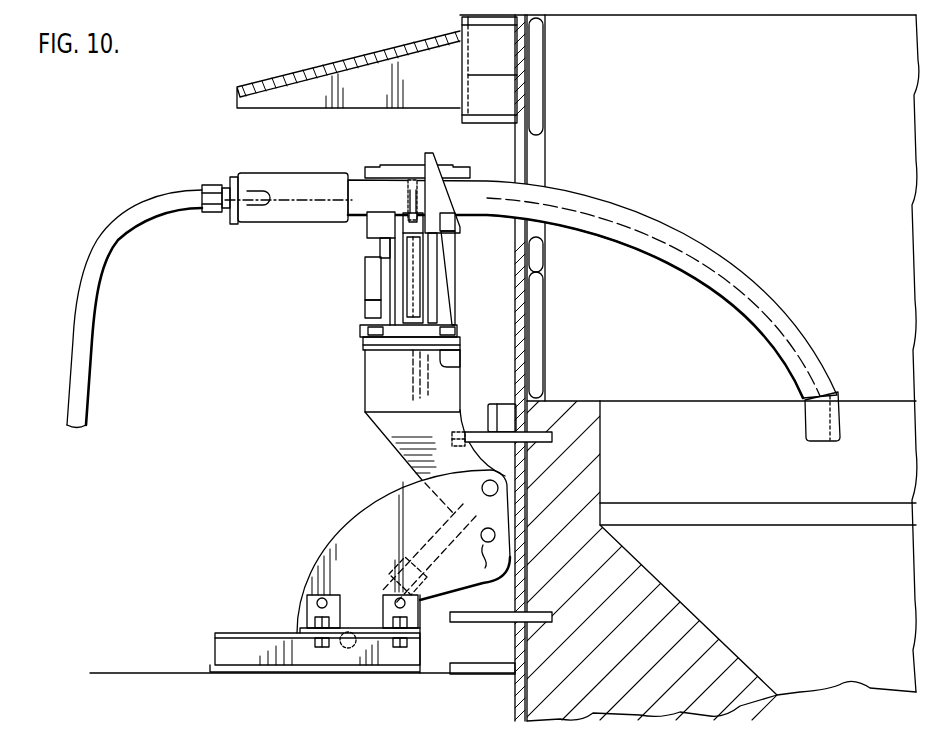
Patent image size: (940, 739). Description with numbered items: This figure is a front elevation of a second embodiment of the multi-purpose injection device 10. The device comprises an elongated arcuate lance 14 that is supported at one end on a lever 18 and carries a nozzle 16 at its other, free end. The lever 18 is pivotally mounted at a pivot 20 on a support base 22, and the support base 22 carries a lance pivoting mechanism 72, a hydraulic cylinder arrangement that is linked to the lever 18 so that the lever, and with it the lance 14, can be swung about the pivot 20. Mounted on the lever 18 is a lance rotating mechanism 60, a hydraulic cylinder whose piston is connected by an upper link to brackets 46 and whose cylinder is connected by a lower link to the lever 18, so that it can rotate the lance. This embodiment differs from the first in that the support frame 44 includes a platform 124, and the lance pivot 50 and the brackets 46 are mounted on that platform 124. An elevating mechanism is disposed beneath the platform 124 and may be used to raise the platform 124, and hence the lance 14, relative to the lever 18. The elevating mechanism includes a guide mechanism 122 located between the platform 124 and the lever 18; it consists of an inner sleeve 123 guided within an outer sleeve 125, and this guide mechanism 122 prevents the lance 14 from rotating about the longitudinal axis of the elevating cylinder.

The injection device 10 is at (625, 199).
The lance 14 is at (788, 311).
The nozzle 16 is at (841, 434).
The lever 18 is at (385, 423).
The pivot 20 is at (501, 631).
The support base 22 is at (424, 652).
The support frame 44 is at (355, 341).
The bracket 46 is at (408, 185).
The lance pivot 50 is at (466, 168).
The lance rotating mechanism 60 is at (423, 288).
The lance pivoting mechanism 72 is at (380, 553).
The guide mechanism 122 is at (364, 279).
The inner sleeve 123 is at (362, 252).
The platform 124 is at (362, 230).
The outer sleeve 125 is at (362, 302).